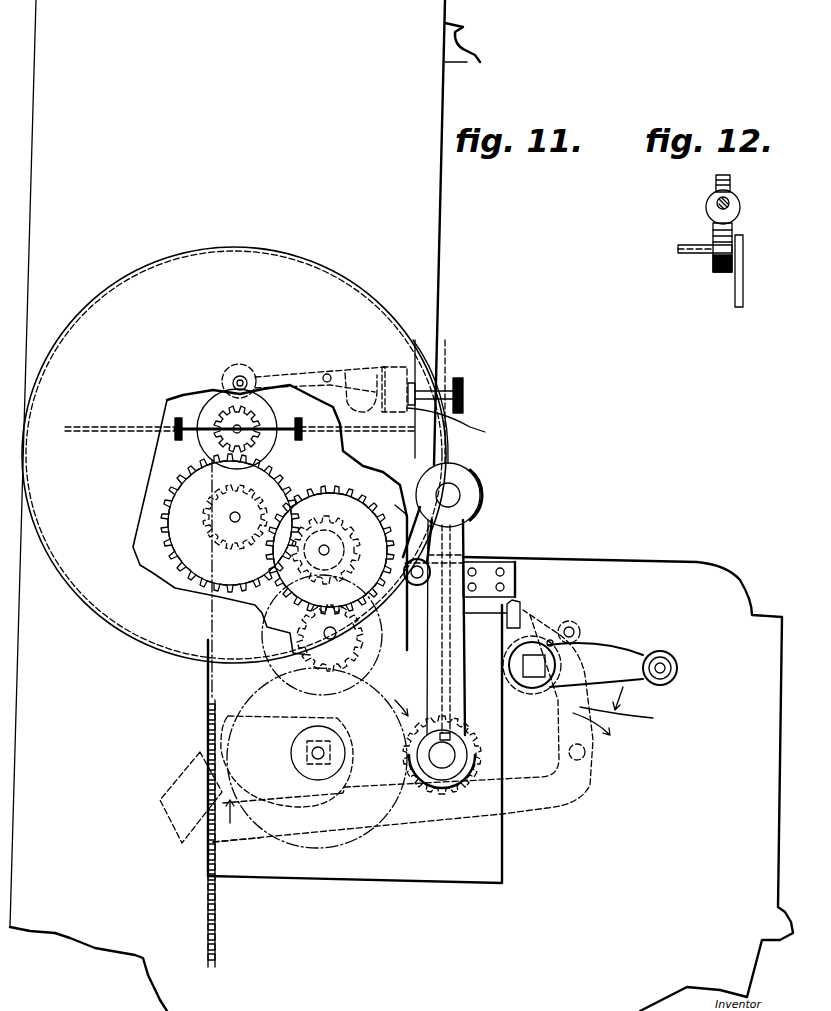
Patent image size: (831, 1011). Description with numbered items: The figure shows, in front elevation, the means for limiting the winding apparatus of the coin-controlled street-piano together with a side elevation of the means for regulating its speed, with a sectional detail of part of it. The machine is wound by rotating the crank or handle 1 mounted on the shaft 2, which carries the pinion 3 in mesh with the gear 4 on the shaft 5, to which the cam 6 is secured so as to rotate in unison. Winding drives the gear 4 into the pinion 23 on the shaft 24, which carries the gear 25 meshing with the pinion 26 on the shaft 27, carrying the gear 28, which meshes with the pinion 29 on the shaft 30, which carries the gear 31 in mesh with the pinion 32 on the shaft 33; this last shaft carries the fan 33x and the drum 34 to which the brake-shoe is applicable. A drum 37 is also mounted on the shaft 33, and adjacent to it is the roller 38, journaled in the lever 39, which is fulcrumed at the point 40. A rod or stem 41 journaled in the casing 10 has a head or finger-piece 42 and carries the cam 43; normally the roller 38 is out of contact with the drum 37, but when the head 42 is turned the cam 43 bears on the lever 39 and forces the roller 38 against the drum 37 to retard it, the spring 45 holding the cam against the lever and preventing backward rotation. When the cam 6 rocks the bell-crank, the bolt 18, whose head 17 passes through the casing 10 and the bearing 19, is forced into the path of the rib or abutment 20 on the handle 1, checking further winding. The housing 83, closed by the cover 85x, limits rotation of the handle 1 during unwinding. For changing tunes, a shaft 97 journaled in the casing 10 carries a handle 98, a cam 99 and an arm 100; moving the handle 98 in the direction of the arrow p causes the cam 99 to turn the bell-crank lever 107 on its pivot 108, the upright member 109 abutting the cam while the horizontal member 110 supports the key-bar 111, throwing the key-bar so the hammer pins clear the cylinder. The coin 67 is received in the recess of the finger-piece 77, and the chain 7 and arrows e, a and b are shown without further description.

In FIG. 11, the casing 10 is at (410, 487).
In FIG. 11, the coin 67 is at (462, 27).
In FIG. 11, the finger-piece 77 is at (468, 62).
In FIG. 11, the direction arrow e is at (476, 67).
In FIG. 11, the crank or handle 1 is at (449, 601).
In FIG. 11, the shaft 2 is at (445, 754).
In FIG. 11, the pinion 3 is at (415, 788).
In FIG. 11, the gear 4 is at (358, 675).
In FIG. 11, the shaft 5 is at (337, 739).
In FIG. 11, the cam 6 is at (287, 761).
In FIG. 11, the chain 7 is at (217, 713).
In FIG. 11, the head 17 is at (417, 585).
In FIG. 11, the bolt 18 is at (402, 592).
In FIG. 11, the bearing 19 is at (420, 560).
In FIG. 11, the rib or abutment 20 is at (455, 562).
In FIG. 11, the pinion 23 is at (352, 664).
In FIG. 11, the shaft 24 is at (322, 635).
In FIG. 11, the gear 25 is at (340, 578).
In FIG. 11, the pinion 26 is at (340, 566).
In FIG. 11, the shaft 27 is at (326, 546).
In FIG. 11, the gear 28 is at (358, 505).
In FIG. 11, the pinion 29 is at (236, 540).
In FIG. 11, the shaft 30 is at (235, 517).
In FIG. 11, the gear 31 is at (180, 533).
In FIG. 11, the pinion 32 is at (262, 444).
In FIG. 11, the shaft 33 is at (252, 452).
In FIG. 12, the shaft 33 is at (707, 246).
In FIG. 11, the fan 33x is at (303, 431).
In FIG. 11, the drum 34 is at (266, 418).
In FIG. 11, the drum 37 is at (200, 420).
In FIG. 12, the drum 37 is at (713, 260).
In FIG. 11, the roller 38 is at (242, 375).
In FIG. 11, the lever 39 is at (320, 372).
In FIG. 12, the lever 39 is at (731, 184).
In FIG. 11, the fulcrum point 40 is at (328, 374).
In FIG. 11, the rod or stem 41 is at (445, 385).
In FIG. 12, the rod or stem 41 is at (738, 208).
In FIG. 11, the head or finger-piece 42 is at (463, 392).
In FIG. 11, the cam 43 is at (385, 412).
In FIG. 12, the cam 43 is at (740, 220).
In FIG. 11, the spring 45 is at (455, 426).
In FIG. 11, the casing or housing 83 is at (480, 754).
In FIG. 11, the cover 85x is at (480, 768).
In FIG. 11, the shaft 97 is at (534, 680).
In FIG. 11, the handle 98 is at (612, 661).
In FIG. 11, the cam 99 is at (551, 640).
In FIG. 11, the arm 100 is at (555, 640).
In FIG. 11, the arrow p is at (605, 711).
In FIG. 11, the bell-crank lever 107 is at (400, 741).
In FIG. 11, the fulcrum 108 is at (586, 756).
In FIG. 11, the upright member 109 is at (633, 719).
In FIG. 11, the horizontal member 110 is at (243, 830).
In FIG. 11, the key-bar 111 is at (172, 815).
In FIG. 11, the direction arrow a is at (428, 650).
In FIG. 11, the direction arrow b is at (317, 758).